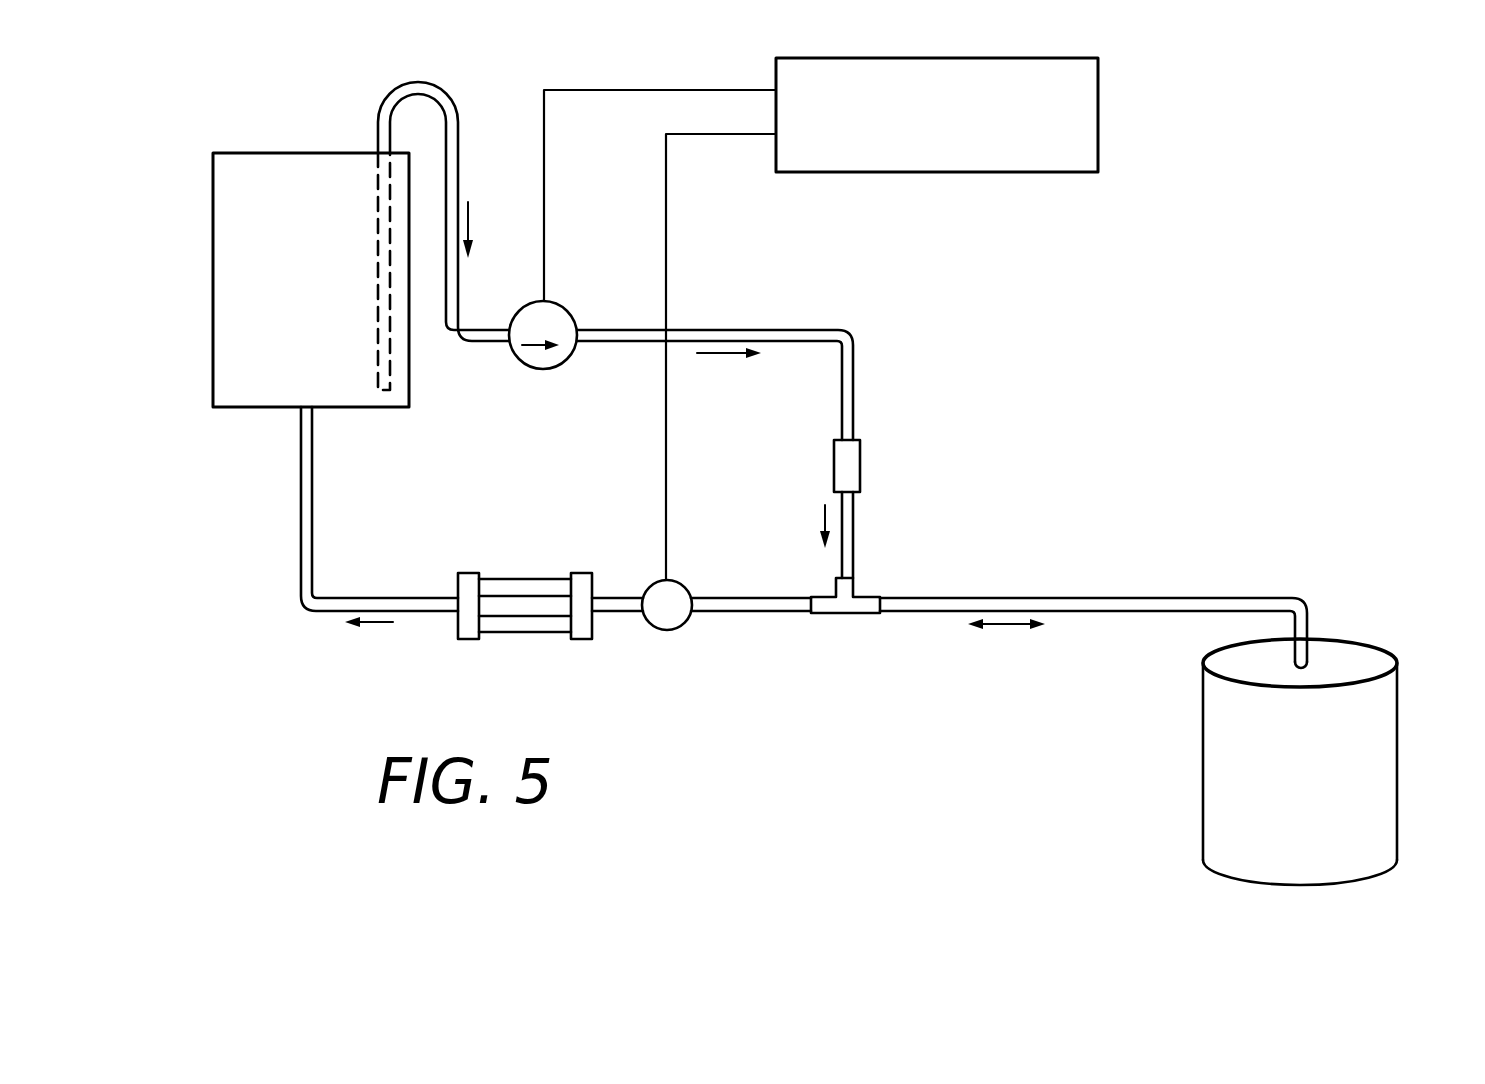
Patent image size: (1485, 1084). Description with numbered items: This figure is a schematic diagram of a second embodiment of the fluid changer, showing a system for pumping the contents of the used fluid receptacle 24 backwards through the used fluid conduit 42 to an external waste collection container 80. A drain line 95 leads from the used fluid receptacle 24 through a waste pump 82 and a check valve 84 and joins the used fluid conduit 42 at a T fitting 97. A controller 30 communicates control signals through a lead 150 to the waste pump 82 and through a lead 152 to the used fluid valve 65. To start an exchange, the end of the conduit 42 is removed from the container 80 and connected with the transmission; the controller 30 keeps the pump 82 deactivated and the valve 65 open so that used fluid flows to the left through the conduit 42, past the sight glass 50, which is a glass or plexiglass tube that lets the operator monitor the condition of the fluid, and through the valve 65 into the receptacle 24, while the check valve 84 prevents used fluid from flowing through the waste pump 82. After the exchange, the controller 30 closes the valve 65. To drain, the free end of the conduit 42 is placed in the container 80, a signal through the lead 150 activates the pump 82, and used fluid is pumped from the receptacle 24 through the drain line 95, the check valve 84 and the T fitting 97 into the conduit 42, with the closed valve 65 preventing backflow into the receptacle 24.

The used fluid receptacle 24 is at (213, 232).
The drain line 95 is at (450, 97).
The waste pump 82 is at (565, 306).
The controller 30 is at (1100, 98).
The lead 150 is at (545, 189).
The lead 152 is at (667, 228).
The check valve 84 is at (860, 456).
The T fitting 97 is at (838, 614).
The used fluid valve 65 is at (667, 630).
The used fluid sight glass 50 is at (529, 575).
The used fluid conduit 42 is at (1084, 598).
The waste collection container 80 is at (1390, 697).